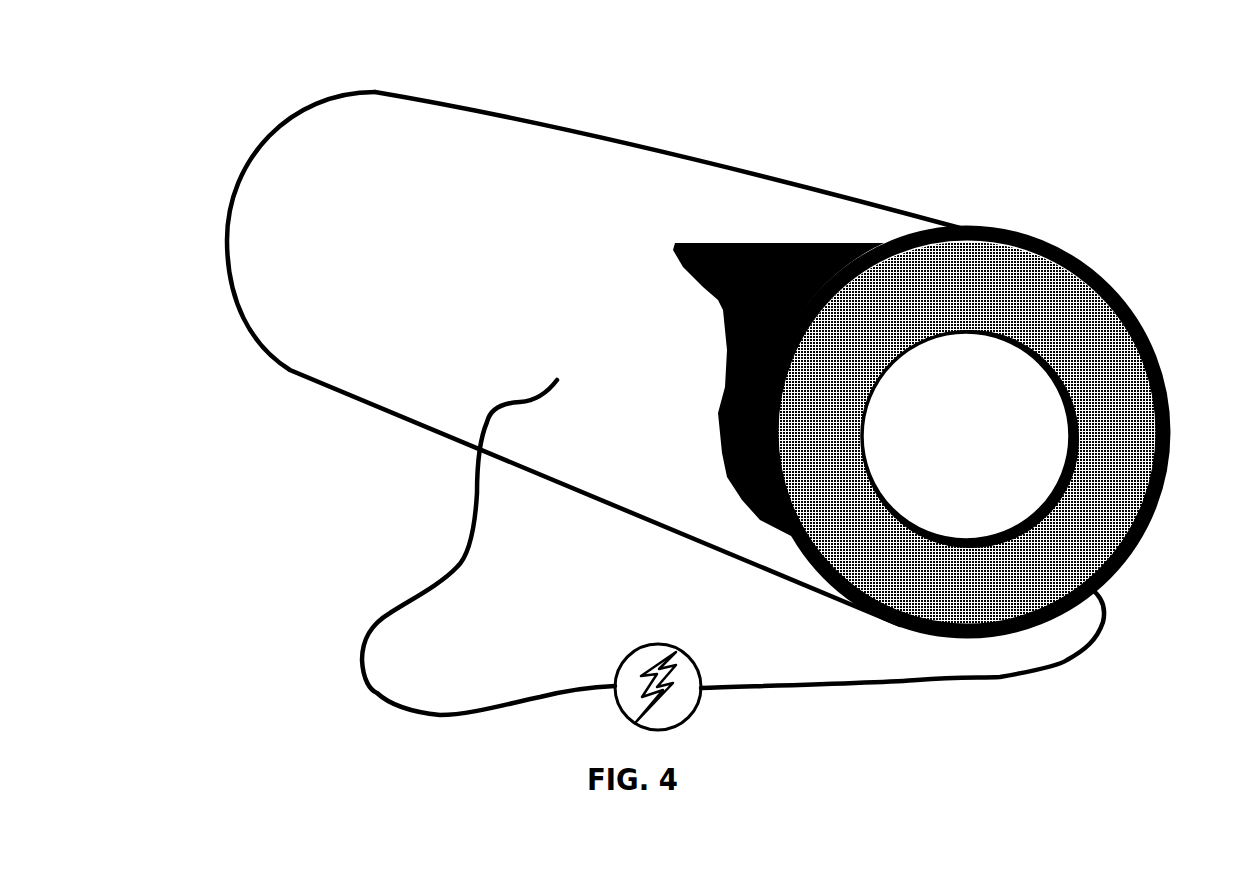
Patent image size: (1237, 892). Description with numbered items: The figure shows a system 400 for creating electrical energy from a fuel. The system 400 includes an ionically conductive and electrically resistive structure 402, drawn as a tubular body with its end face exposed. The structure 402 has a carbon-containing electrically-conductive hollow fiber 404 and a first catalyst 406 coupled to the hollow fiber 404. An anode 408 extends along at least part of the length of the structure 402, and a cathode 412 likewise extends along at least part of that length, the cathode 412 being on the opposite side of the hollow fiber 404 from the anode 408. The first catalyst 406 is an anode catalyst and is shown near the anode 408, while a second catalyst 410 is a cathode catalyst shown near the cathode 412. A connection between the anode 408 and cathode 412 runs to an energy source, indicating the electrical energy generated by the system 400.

The system 400 is at (709, 383).
The ionically conductive and electrically resistive structure 402 is at (719, 350).
The carbon-containing electrically-conductive hollow fiber 404 is at (997, 298).
The first catalyst 406 is at (1003, 503).
The anode 408 is at (972, 467).
The second catalyst 410 is at (860, 258).
The cathode 412 is at (592, 173).